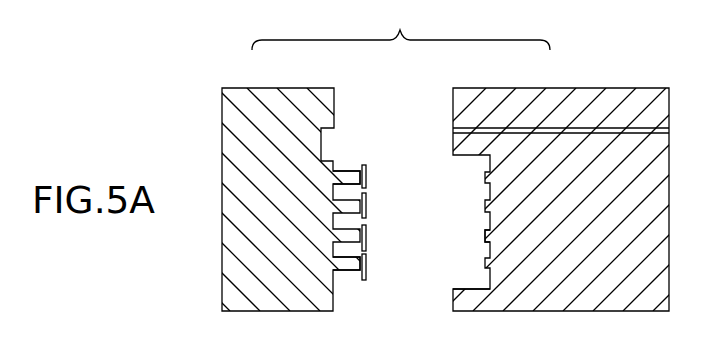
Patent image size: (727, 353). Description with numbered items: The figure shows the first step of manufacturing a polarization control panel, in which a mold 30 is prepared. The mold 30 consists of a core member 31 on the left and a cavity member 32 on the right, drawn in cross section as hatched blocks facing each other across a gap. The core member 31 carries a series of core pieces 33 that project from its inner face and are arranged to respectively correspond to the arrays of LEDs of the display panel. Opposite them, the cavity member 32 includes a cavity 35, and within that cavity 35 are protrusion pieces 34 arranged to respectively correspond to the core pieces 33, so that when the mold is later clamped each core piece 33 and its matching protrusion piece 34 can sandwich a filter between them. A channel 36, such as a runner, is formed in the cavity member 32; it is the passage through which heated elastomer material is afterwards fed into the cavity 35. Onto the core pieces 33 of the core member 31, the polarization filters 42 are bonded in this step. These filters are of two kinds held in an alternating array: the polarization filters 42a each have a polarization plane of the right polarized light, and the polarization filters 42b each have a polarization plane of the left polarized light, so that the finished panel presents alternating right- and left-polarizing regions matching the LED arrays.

The mold 30 is at (401, 26).
The core member 31 is at (277, 90).
The cavity member 32 is at (533, 90).
The core pieces 33 is at (352, 172).
The protrusion pieces 34 is at (487, 233).
The cavity 35 is at (458, 281).
The channel 36 is at (620, 130).
The polarization filters 42 is at (367, 175).
The polarization filter (right polarized light) 42a is at (367, 243).
The polarization filter (left polarized light) 42b is at (367, 272).